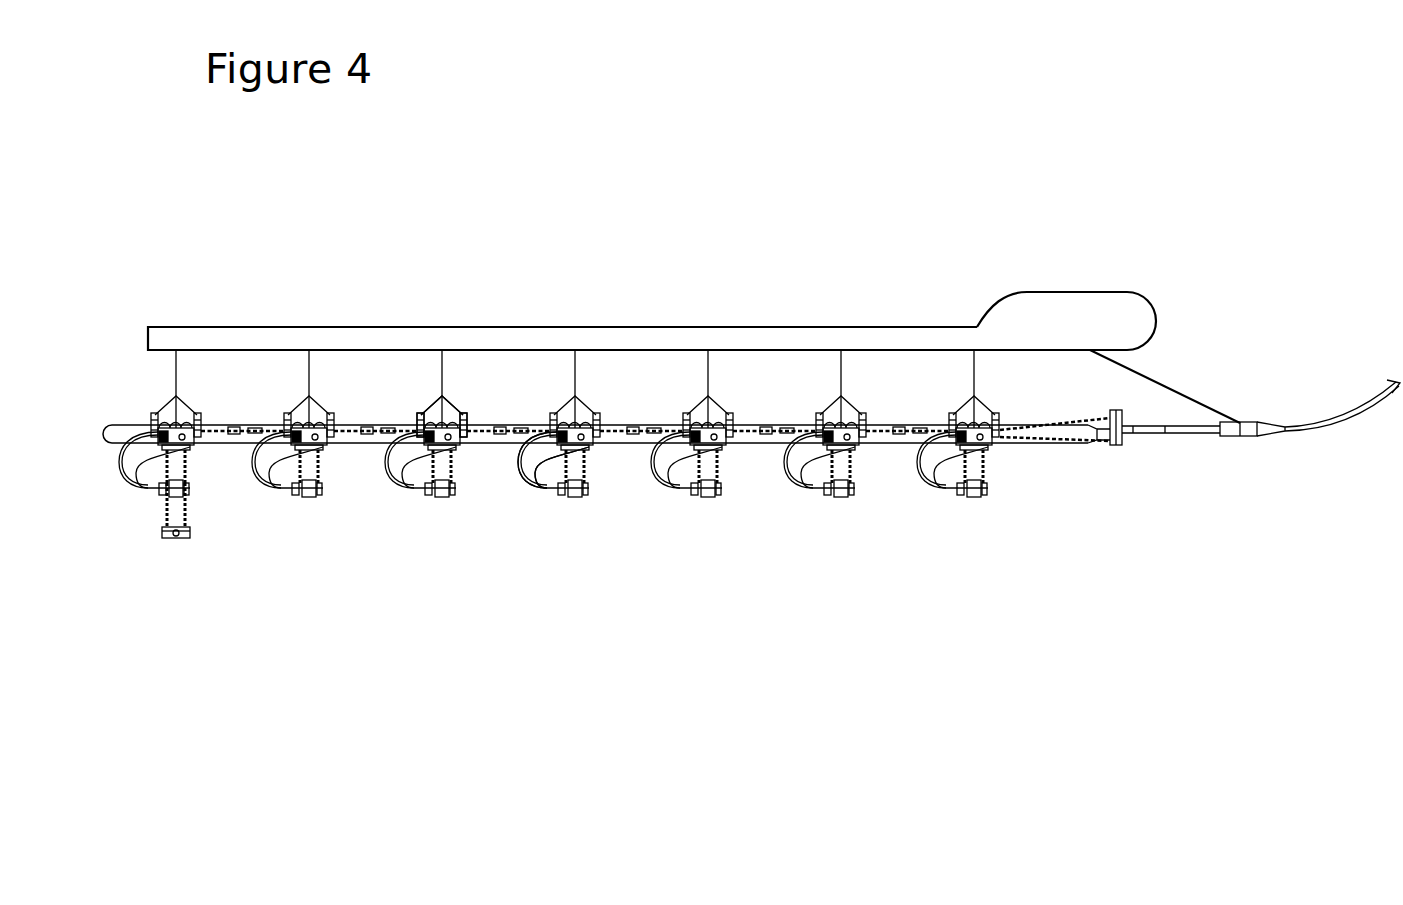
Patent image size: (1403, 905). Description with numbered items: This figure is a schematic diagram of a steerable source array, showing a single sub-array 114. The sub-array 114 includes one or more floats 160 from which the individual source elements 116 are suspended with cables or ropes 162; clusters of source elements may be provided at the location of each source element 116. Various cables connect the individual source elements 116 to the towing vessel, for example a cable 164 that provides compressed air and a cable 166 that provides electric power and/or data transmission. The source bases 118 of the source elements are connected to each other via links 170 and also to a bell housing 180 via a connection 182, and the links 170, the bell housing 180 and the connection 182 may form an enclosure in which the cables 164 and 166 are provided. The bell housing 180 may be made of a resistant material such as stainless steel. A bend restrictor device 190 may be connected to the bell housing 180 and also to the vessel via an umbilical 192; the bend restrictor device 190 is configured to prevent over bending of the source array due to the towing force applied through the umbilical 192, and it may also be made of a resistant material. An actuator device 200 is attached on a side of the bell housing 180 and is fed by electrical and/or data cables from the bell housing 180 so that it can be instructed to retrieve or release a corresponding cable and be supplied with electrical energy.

The sub-array 114 is at (649, 243).
The individual source elements 116 is at (560, 468).
The source bases 118 is at (723, 445).
The float 160 is at (1063, 313).
The cables or ropes 162 is at (445, 398).
The cable 164 is at (517, 467).
The cable 166 is at (543, 487).
The links 170 is at (925, 422).
The bell housing 180 is at (1123, 440).
The connection 182 is at (1052, 440).
The bend restrictor device 190 is at (1243, 438).
The umbilical 192 is at (1345, 428).
The actuator device 200 is at (1113, 413).